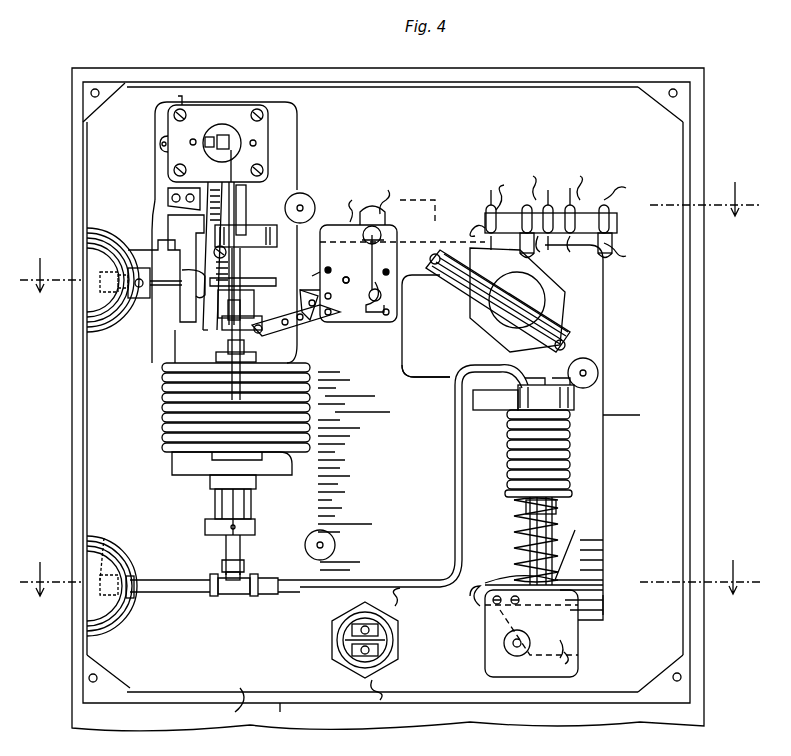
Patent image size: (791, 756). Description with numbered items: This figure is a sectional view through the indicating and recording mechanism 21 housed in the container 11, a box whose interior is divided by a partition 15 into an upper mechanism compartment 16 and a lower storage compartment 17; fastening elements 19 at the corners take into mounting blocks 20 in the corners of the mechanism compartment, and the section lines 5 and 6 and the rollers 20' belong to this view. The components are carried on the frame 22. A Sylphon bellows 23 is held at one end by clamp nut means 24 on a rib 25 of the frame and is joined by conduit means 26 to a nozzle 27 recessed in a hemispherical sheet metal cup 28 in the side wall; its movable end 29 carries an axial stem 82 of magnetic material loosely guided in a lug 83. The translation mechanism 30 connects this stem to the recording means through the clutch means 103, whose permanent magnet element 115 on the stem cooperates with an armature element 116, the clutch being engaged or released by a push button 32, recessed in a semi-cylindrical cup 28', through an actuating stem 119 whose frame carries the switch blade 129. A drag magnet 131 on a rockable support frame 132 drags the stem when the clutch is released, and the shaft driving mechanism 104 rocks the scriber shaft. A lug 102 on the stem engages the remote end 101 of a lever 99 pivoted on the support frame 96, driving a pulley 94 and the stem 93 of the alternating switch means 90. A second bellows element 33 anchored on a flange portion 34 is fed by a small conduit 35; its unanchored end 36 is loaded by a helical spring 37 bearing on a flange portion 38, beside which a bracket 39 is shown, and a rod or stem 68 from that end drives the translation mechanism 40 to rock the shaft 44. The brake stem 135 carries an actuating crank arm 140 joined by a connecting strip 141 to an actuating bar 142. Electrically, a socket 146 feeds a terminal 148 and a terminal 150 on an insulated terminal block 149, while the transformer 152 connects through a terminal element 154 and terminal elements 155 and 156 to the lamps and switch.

The section line 5- 5 is at (390, 237).
The section line 6- 6 is at (390, 574).
The container 11 is at (72, 404).
The partition 15 is at (185, 692).
The mechanism compartment 16 is at (235, 712).
The storage compartment 17 is at (280, 712).
The fastening elements 19 is at (97, 89).
The mounting blocks 20 is at (383, 387).
The guide roller 20' is at (460, 371).
The indicating and recording mechanism 21 is at (648, 419).
The frame 22 is at (165, 160).
The bellows 23 is at (164, 414).
The clamp nut means 24 is at (212, 492).
The rib 25 is at (175, 470).
The conduit means 26 is at (196, 584).
The nozzle 27 is at (106, 560).
The hemispherical sheet metal cup 28 is at (117, 589).
The semi-cylindrical sheet metal cup 28' is at (146, 305).
The movable end of bellows 29 is at (228, 354).
The translation mechanism 30 is at (169, 309).
The push button 32 is at (100, 272).
The bellows element 33 is at (512, 442).
The flange portion 34 is at (480, 400).
The conduit 35 is at (455, 474).
The unanchored end of bellows 36 is at (512, 495).
The helical spring 37 is at (512, 545).
The flange portion 38 is at (570, 585).
The bracket 39 is at (590, 630).
The translation mechanism 40 is at (463, 654).
The shaft 44 is at (510, 648).
The rod or stem 68 is at (548, 552).
The stem 82 is at (244, 260).
The lug 83 is at (246, 232).
The alternating switch means 90 is at (420, 216).
The stem 93 is at (372, 270).
The pulley 94 is at (257, 143).
The support frame 96 is at (372, 322).
The lever 99 is at (312, 320).
The remote end of lever 101 is at (262, 333).
The lug 102 is at (250, 332).
The clutch means 103 is at (192, 336).
The shaft driving mechanism 104 is at (240, 104).
The permanent magnet element 115 is at (254, 297).
The armature element 116 is at (210, 332).
The actuating stem 119 is at (200, 239).
The switch blade 129 is at (160, 250).
The permanent magnet 131 is at (248, 190).
The rockable support frame 132 is at (182, 206).
The stem 135 is at (528, 527).
The actuating crank arm 140 is at (500, 366).
The connecting strip 141 is at (410, 370).
The actuating bar 142 is at (305, 280).
The socket 146 is at (340, 636).
The terminal 148 is at (490, 205).
The insulated terminal block 149 is at (527, 205).
The terminal 150 is at (550, 205).
The transformer 152 is at (540, 297).
The terminal element 154 is at (575, 205).
The terminal element 155 is at (606, 205).
The terminal element 156 is at (612, 214).